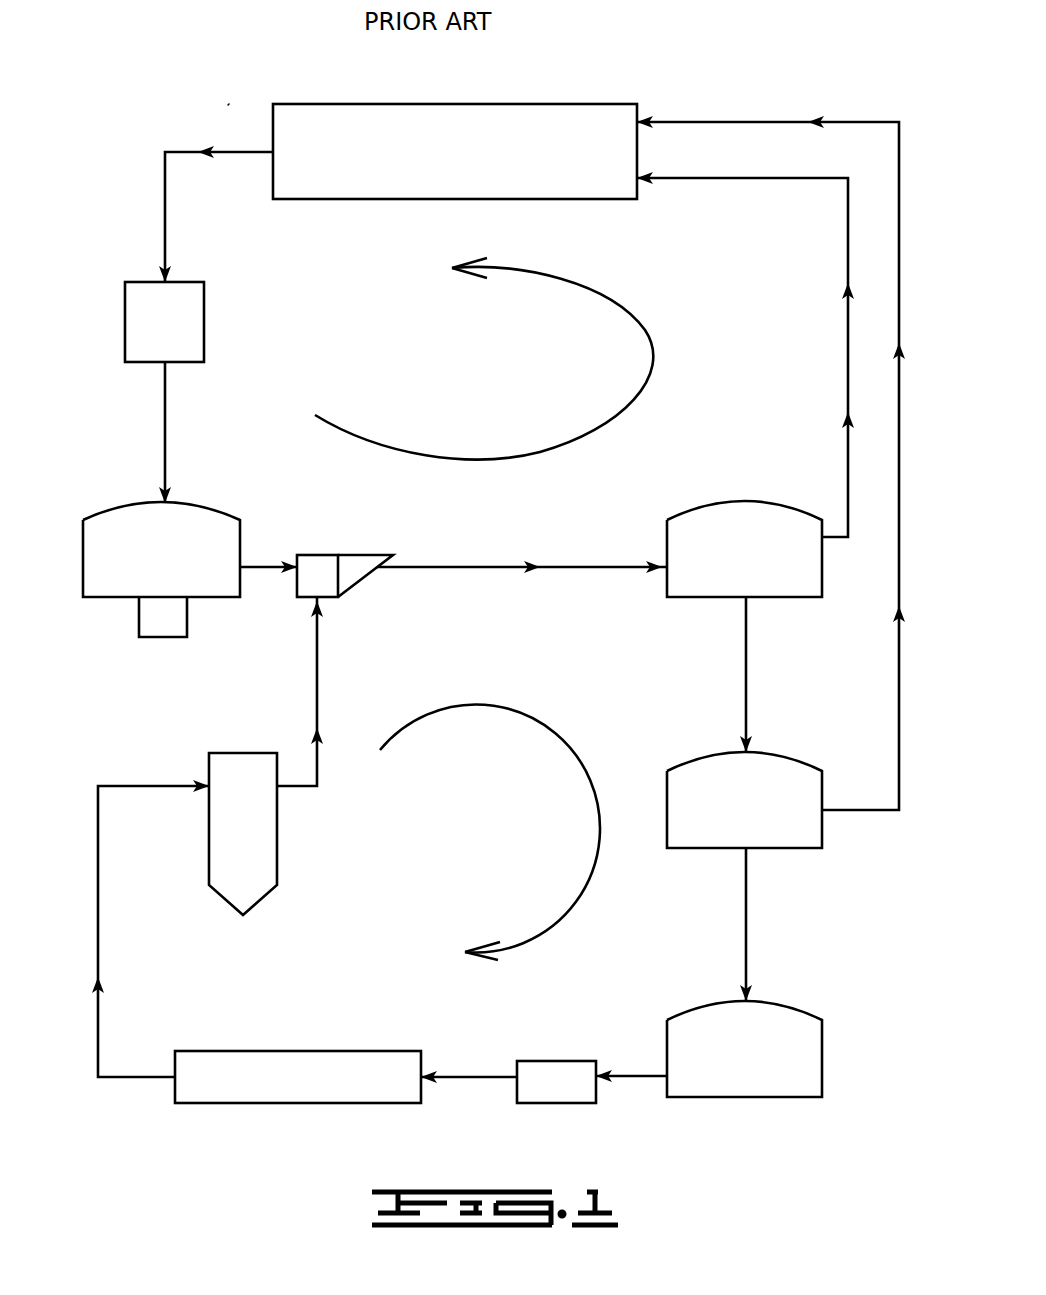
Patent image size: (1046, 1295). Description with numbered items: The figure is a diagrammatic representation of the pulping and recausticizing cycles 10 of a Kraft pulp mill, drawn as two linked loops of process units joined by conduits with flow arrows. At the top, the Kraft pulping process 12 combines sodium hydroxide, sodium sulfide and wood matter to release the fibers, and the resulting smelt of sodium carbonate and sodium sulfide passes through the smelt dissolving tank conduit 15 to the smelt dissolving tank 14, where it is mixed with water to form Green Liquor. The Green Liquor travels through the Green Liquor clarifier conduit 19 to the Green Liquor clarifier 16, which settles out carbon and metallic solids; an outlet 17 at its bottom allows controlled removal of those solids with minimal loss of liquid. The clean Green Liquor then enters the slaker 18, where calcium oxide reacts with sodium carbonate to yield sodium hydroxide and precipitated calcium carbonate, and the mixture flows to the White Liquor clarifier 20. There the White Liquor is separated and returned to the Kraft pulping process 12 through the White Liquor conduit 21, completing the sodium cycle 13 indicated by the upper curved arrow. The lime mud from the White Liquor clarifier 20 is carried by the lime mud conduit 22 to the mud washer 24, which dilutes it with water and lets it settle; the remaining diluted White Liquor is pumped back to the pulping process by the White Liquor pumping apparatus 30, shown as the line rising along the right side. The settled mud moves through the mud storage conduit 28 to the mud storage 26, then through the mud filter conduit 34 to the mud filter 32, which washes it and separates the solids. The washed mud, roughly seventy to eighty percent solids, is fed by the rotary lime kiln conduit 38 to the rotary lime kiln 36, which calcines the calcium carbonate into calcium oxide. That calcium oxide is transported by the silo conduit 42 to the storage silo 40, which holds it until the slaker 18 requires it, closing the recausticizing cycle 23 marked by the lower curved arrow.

The pulping and recausticizing cycles 10 is at (228, 104).
The Kraft pulping process 12 is at (537, 122).
The sodium cycle 13 is at (620, 300).
The smelt dissolving tank 14 is at (204, 330).
The smelt dissolving tank conduit 15 is at (165, 215).
The Green Liquor clarifier 16 is at (205, 515).
The outlet 17 is at (157, 628).
The slaker 18 is at (322, 555).
The Green Liquor clarifier conduit 19 is at (165, 435).
The White Liquor clarifier 20 is at (787, 598).
The White Liquor conduit 21 is at (848, 355).
The lime mud conduit 22 is at (747, 690).
The recausticizing cycle 23 is at (560, 732).
The mud washer 24 is at (787, 848).
The mud storage 26 is at (800, 1073).
The mud storage conduit 28 is at (747, 940).
The White Liquor pumping apparatus 30 is at (862, 122).
The mud filter 32 is at (555, 1103).
The mud filter conduit 34 is at (630, 1076).
The rotary lime kiln 36 is at (282, 1087).
The rotary lime kiln conduit 38 is at (470, 1077).
The storage silo 40 is at (255, 853).
The silo conduit 42 is at (98, 940).